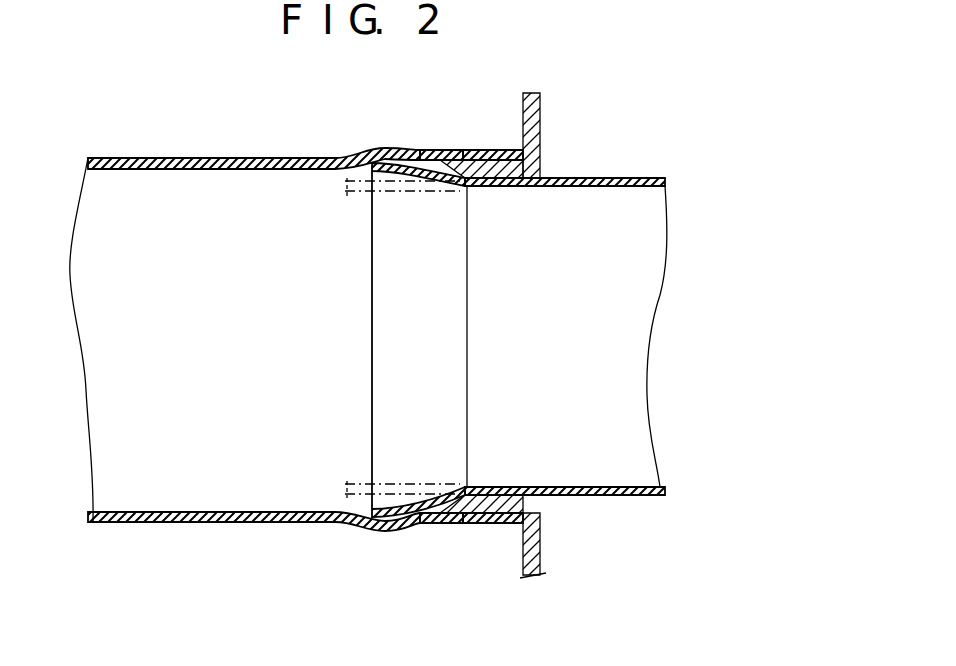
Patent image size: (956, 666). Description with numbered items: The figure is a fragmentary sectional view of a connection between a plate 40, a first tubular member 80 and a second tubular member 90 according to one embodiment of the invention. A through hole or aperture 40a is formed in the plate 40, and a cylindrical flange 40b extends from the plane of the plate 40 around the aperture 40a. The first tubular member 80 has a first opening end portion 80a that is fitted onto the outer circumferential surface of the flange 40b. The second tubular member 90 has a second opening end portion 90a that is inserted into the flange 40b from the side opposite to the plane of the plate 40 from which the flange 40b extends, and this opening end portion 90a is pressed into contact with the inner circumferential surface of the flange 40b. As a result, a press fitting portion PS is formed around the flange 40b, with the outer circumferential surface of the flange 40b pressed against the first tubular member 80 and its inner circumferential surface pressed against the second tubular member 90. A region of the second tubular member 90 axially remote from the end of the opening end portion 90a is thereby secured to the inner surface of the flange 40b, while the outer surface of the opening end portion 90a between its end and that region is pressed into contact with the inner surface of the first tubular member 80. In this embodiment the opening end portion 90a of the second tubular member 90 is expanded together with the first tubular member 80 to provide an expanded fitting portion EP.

The first tubular member 80 is at (162, 155).
The first opening end portion 80a is at (451, 149).
The second tubular member 90 is at (588, 497).
The second opening end portion 90a is at (326, 520).
The plate 40 is at (540, 100).
The aperture 40a is at (539, 177).
The cylindrical flange 40b is at (475, 150).
The expanded fitting portion EP is at (397, 533).
The press fitting portion PS is at (493, 525).